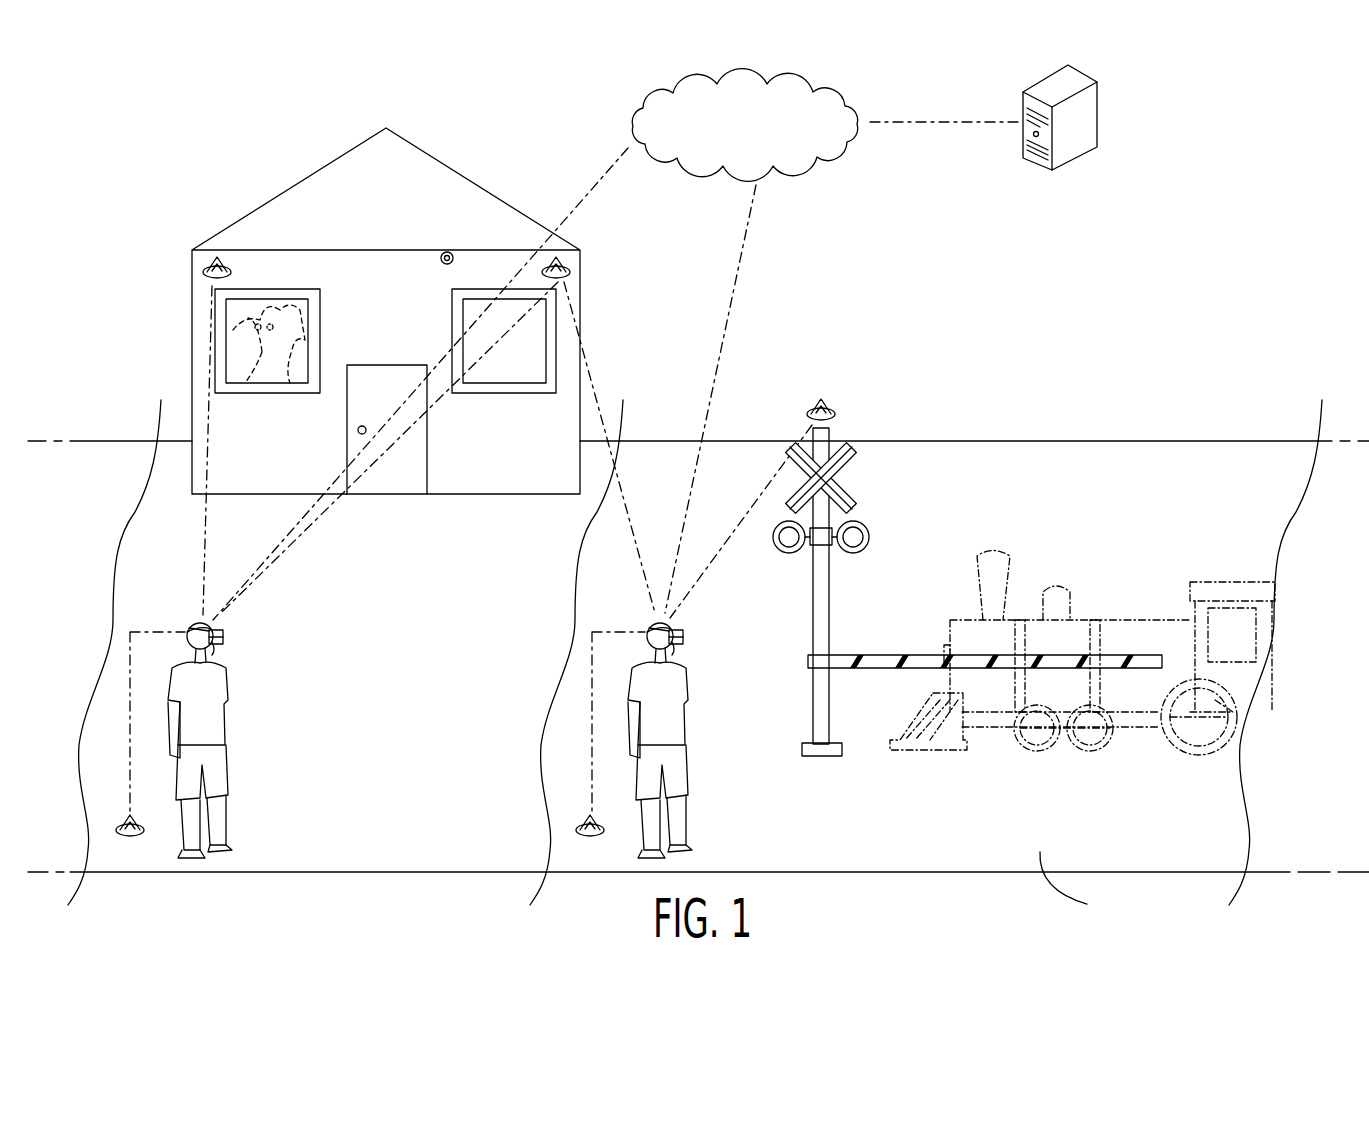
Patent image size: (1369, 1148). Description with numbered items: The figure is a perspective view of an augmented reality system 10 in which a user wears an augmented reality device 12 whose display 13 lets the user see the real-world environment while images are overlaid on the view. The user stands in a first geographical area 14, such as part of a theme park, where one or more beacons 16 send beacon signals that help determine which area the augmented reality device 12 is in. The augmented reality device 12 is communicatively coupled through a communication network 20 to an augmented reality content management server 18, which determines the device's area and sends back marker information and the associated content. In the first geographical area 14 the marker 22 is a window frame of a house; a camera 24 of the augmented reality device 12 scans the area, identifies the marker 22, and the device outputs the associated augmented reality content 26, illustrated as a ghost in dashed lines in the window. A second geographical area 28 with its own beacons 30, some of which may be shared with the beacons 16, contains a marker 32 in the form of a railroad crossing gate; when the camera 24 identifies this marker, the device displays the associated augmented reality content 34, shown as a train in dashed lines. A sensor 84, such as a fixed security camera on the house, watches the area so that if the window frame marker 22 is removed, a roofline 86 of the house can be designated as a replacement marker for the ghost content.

The augmented reality system 10 is at (178, 114).
The augmented reality device 12 is at (222, 650).
The display 13 is at (214, 650).
The first geographical area 14 is at (365, 852).
The beacons 16 is at (203, 272).
The augmented reality content management server 18 is at (1097, 115).
The communication network 20 is at (858, 150).
The marker 22 is at (285, 289).
The camera 24 is at (225, 640).
The augmented reality content 26 is at (315, 314).
The second geographical area 28 is at (1077, 887).
The beacons 30 is at (578, 268).
The marker 32 is at (862, 655).
The augmented reality content 34 is at (1150, 620).
The sensor 84 is at (440, 261).
The roofline 86 is at (336, 250).